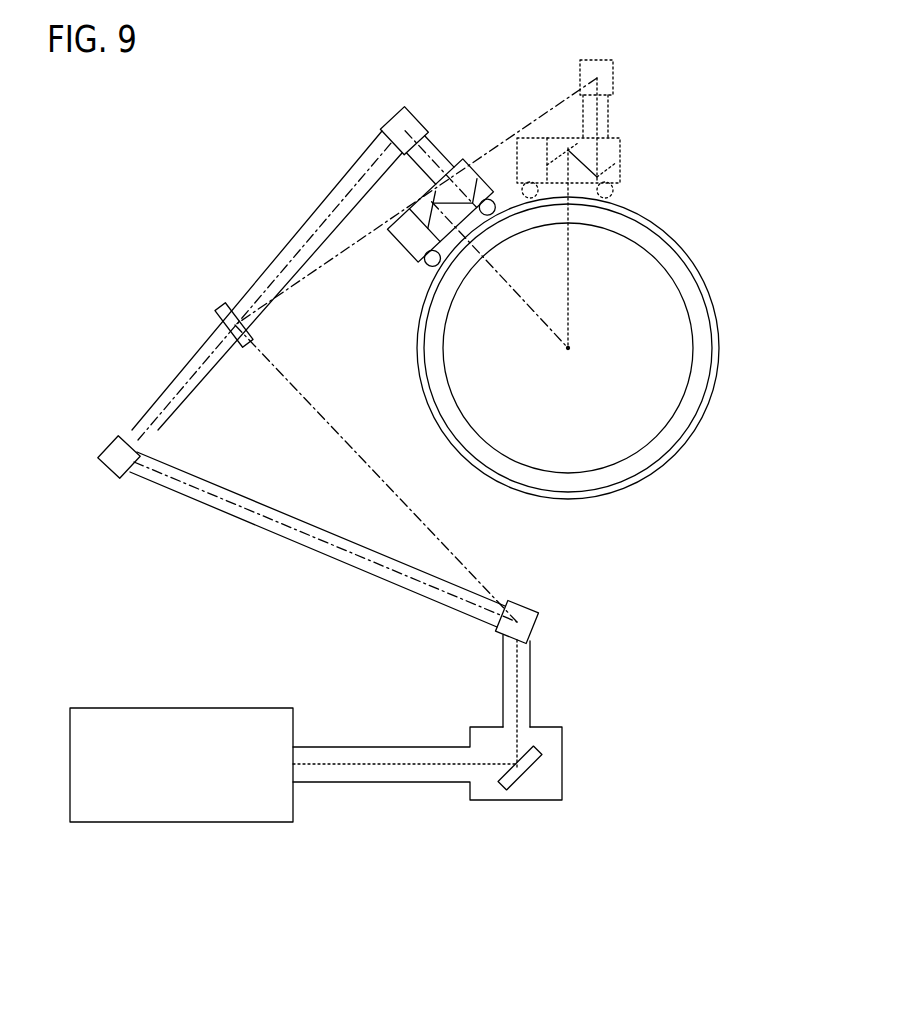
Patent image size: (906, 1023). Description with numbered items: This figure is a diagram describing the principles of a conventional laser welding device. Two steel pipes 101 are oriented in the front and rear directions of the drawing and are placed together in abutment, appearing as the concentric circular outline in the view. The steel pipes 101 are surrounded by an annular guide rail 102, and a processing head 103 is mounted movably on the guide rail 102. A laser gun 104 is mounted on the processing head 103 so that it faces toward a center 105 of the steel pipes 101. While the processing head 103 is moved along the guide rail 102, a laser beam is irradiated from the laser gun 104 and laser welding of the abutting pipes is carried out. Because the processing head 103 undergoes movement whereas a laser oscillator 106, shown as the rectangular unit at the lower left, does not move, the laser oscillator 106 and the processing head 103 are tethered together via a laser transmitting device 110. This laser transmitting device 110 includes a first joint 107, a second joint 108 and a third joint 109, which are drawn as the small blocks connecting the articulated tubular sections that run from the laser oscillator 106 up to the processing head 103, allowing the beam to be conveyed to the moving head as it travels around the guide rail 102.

The steel pipe 101 is at (663, 271).
The annular guide rail 102 is at (681, 243).
The processing head 103 is at (402, 247).
The laser gun 104 is at (478, 280).
The center 105 is at (568, 352).
The laser oscillator 106 is at (170, 800).
The first joint 107 is at (538, 624).
The second joint 108 is at (113, 474).
The third joint 109 is at (413, 121).
The laser transmitting device 110 is at (258, 256).